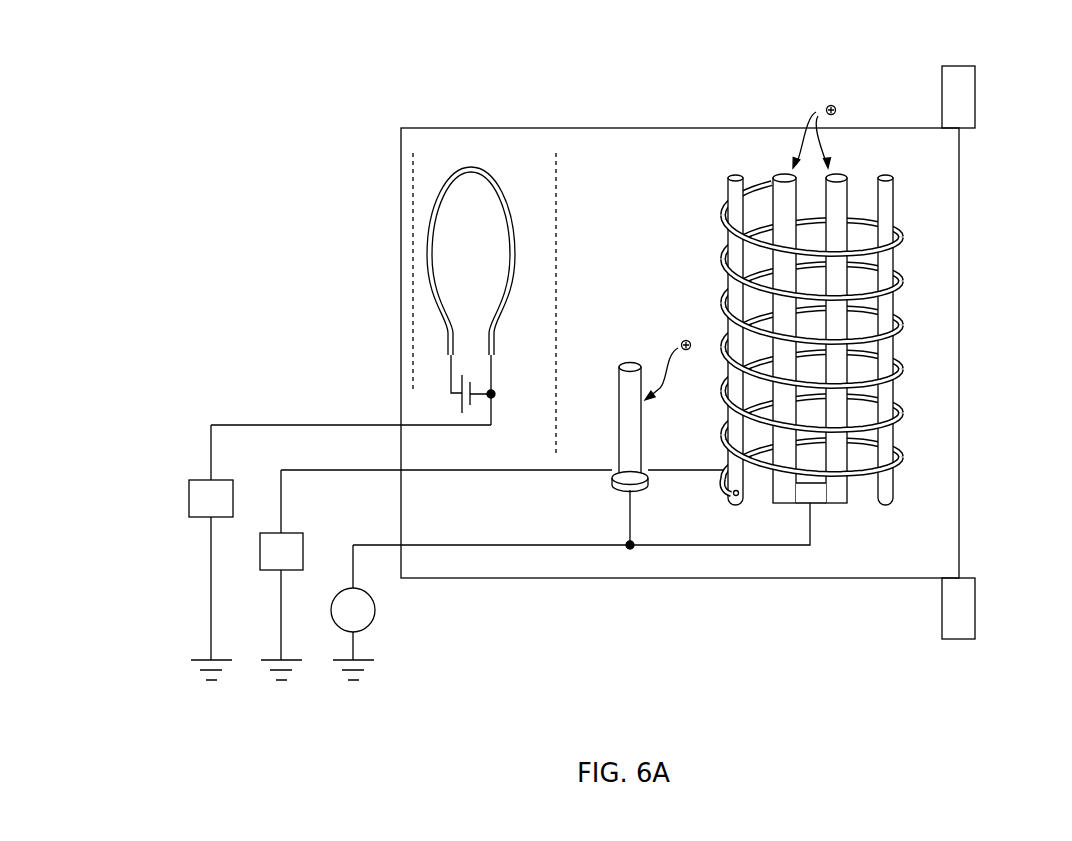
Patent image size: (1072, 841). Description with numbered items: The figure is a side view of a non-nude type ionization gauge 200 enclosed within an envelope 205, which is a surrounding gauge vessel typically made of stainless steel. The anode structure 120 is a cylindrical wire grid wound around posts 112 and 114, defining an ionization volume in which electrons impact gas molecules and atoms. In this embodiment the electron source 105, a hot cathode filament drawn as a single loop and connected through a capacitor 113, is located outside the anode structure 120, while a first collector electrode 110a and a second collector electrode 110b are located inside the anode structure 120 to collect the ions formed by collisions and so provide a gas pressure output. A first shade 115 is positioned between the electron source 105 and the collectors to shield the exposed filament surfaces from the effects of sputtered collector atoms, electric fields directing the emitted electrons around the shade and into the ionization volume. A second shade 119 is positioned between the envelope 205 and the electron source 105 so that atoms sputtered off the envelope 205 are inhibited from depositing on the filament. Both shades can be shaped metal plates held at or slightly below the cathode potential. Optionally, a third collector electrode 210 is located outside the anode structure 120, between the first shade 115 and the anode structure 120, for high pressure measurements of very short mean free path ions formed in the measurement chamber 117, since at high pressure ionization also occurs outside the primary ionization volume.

The ionization gauge 200 is at (368, 72).
The envelope 205 is at (589, 578).
The electron source 105 is at (446, 322).
The capacitor 113 is at (460, 410).
The second shade 119 is at (413, 232).
The first shade 115 is at (557, 210).
The third collector electrode 210 is at (627, 362).
The measurement chamber 117 is at (668, 452).
The anode structure 120 is at (812, 331).
The post 112 is at (736, 176).
The post 114 is at (886, 176).
The first collector electrode 110a is at (785, 176).
The second collector electrode 110b is at (838, 176).